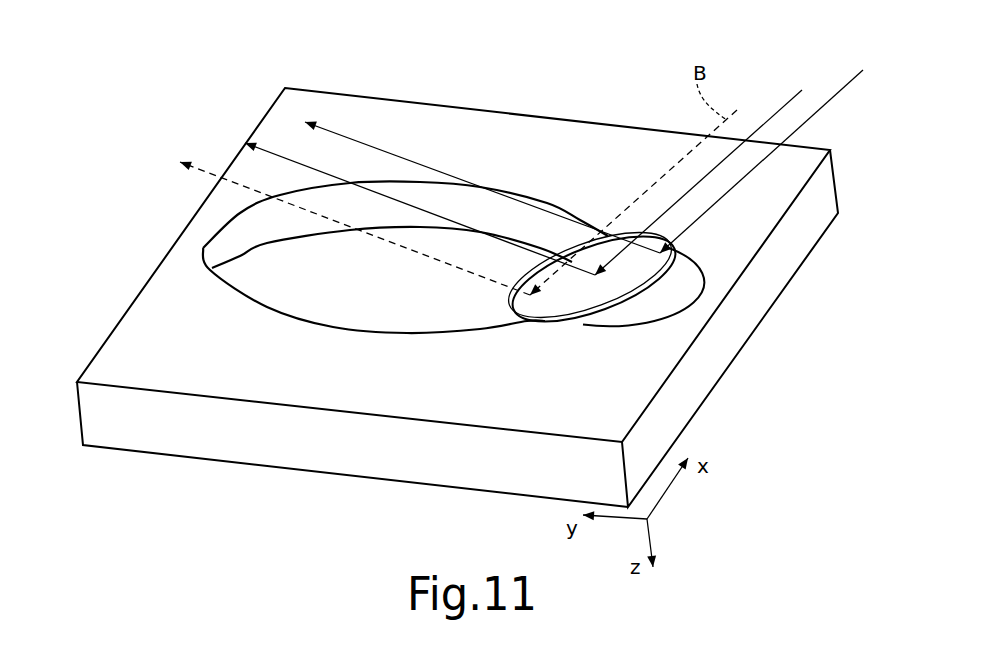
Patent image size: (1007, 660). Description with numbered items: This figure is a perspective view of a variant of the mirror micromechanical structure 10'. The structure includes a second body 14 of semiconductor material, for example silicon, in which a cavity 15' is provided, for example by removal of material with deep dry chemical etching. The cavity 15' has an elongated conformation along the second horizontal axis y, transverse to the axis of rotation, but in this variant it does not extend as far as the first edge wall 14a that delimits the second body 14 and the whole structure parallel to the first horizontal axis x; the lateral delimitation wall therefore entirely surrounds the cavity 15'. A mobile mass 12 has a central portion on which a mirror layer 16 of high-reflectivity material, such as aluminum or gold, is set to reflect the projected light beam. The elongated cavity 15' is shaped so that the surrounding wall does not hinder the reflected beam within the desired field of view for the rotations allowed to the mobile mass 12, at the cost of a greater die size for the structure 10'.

The mirror micromechanical structure 10' is at (440, 286).
The mobile mass 12 is at (623, 290).
The second body 14 is at (713, 388).
The first edge wall 14a is at (77, 418).
The cavity 15' is at (405, 358).
The mirror layer 16 is at (594, 303).